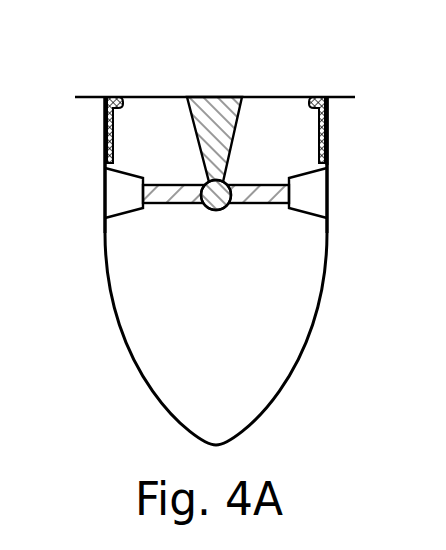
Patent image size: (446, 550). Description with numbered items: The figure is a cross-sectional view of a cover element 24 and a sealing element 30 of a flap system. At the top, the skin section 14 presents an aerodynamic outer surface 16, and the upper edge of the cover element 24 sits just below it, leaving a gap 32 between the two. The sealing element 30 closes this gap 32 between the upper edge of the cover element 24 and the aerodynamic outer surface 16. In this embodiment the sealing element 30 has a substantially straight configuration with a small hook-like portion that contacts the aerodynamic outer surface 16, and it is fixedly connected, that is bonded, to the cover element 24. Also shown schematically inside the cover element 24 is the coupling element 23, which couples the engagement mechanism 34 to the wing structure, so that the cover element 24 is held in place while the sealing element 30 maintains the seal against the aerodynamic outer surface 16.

The skin section 14 is at (93, 96).
The aerodynamic outer surface 16 is at (347, 101).
The coupling element 23 is at (217, 135).
The cover element 24 is at (116, 307).
The sealing element 30 is at (318, 133).
The gap 32 is at (97, 117).
The engagement mechanism 34 is at (97, 203).